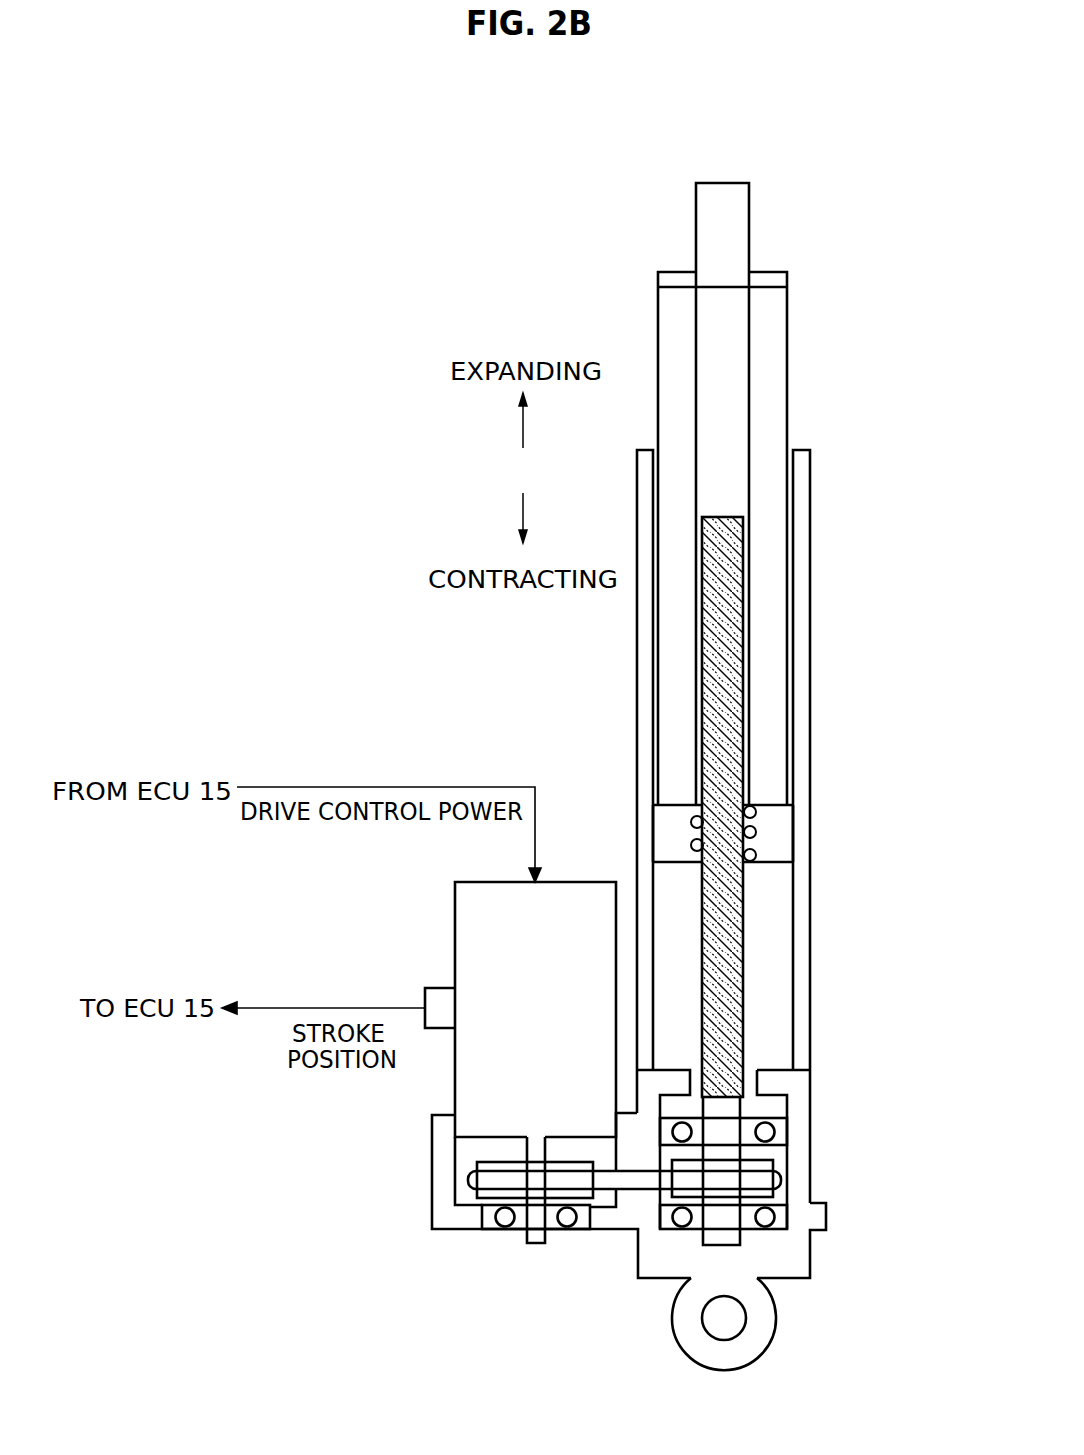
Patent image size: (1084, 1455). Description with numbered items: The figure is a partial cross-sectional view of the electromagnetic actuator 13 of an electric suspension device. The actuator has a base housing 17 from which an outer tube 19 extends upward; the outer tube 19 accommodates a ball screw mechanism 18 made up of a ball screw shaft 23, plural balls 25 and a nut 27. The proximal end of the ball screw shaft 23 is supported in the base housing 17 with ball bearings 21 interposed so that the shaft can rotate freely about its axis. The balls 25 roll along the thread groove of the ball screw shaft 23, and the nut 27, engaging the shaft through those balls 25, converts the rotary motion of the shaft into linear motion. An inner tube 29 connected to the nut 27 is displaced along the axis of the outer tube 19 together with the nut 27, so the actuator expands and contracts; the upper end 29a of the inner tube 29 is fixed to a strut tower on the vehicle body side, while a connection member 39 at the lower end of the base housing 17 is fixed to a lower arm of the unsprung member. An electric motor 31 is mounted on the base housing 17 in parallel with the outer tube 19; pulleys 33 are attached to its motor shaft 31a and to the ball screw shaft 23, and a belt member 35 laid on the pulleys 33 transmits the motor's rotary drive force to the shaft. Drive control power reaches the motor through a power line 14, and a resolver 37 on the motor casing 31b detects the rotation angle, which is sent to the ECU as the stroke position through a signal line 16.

The electromagnetic actuator 13 is at (832, 297).
The power line 14 is at (385, 787).
The signal line 16 is at (318, 1007).
The base housing 17 is at (800, 1168).
The ball screw mechanism 18 is at (889, 727).
The outer tube 19 is at (800, 503).
The ball bearing 21 is at (792, 1132).
The ball screw shaft 23 is at (735, 912).
The balls 25 is at (756, 855).
The nut 27 is at (677, 817).
The inner tube 29 is at (773, 366).
The upper end 29a is at (732, 228).
The electric motor 31 is at (563, 903).
The motor shaft 31a is at (535, 1245).
The casing 31b is at (468, 912).
The pulley 33 is at (470, 1181).
The belt member 35 is at (633, 1180).
The resolver 37 is at (442, 999).
The connection member 39 is at (765, 1318).